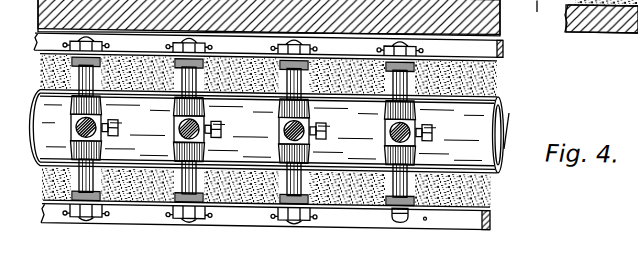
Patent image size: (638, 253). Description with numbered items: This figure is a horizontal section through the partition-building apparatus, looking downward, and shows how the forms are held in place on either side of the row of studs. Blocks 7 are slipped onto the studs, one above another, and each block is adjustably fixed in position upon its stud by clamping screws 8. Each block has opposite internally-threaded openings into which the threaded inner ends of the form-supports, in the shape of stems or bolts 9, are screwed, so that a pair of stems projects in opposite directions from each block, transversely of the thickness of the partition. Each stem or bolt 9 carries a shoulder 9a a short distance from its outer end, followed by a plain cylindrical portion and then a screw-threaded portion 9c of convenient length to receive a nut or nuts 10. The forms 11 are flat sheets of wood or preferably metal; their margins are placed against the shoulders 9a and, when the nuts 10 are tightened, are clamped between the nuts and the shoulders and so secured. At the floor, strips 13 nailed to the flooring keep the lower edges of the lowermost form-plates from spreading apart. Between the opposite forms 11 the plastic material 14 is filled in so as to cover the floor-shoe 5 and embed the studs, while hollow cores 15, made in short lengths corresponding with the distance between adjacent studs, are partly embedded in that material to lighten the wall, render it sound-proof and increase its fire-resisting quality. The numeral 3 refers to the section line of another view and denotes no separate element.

The pipe clamp upper band 3 is at (72, 127).
The floor-shoe 5 is at (509, 111).
The block 7 is at (280, 143).
The clamping screw 8 is at (326, 122).
The stem or bolt 9 is at (266, 116).
The shoulder 9a is at (417, 228).
The screw-threaded portion 9c is at (394, 230).
The nut 10 is at (62, 43).
The form 11 is at (137, 45).
The strip 13 is at (478, 0).
The plastic material 14 is at (615, 23).
The core 15 is at (500, 138).